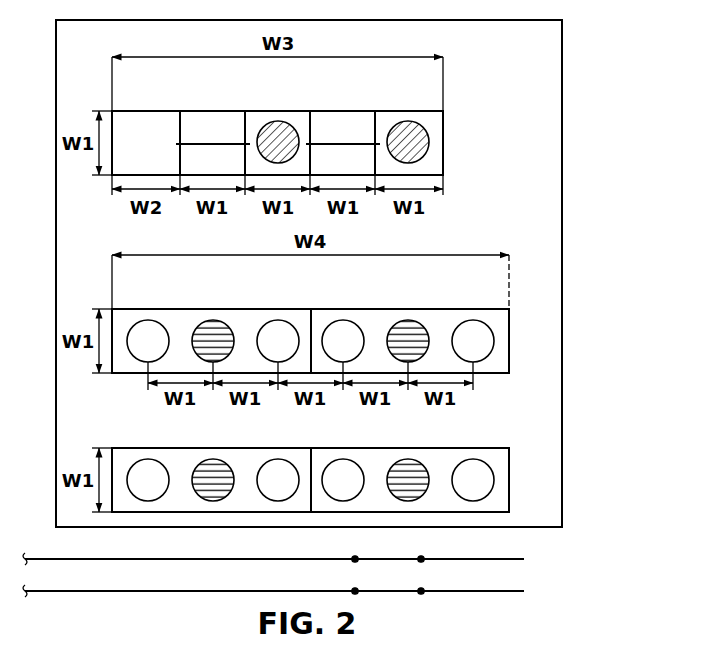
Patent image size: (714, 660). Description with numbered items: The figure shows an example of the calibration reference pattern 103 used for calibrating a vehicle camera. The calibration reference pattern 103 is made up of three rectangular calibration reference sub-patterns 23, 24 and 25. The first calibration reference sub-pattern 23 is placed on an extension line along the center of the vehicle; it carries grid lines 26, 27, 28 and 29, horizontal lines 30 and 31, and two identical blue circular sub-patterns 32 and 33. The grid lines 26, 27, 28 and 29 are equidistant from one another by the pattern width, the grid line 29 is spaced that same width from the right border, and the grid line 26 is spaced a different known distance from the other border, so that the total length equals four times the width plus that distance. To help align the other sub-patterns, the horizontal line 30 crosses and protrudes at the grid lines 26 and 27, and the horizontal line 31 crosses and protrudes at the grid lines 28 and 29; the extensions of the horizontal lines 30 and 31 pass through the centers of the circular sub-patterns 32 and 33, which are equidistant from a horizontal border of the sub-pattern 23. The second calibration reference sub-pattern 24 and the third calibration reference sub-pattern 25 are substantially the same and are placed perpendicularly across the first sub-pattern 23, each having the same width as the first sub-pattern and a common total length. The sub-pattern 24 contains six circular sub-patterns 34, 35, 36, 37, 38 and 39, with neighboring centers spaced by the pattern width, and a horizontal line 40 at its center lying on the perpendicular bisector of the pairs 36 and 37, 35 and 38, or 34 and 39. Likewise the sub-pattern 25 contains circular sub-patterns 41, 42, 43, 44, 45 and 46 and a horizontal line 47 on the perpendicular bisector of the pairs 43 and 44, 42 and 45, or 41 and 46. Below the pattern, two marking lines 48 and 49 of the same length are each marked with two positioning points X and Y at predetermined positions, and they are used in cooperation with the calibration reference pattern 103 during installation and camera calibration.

The calibration reference pattern 103 is at (562, 272).
The first calibration reference sub-pattern 23 is at (443, 137).
The second calibration reference sub-pattern 24 is at (509, 335).
The third calibration reference sub-pattern 25 is at (509, 474).
The grid line 26 is at (180, 123).
The grid line 27 is at (245, 123).
The grid line 28 is at (310, 123).
The grid line 29 is at (375, 123).
The horizontal line 30 is at (213, 143).
The horizontal line 31 is at (343, 143).
The circular sub-pattern 32 is at (280, 121).
The circular sub-pattern 33 is at (409, 121).
The circular sub-pattern 34 is at (151, 322).
The circular sub-pattern 35 is at (216, 322).
The circular sub-pattern 36 is at (281, 322).
The circular sub-pattern 37 is at (346, 322).
The circular sub-pattern 38 is at (410, 322).
The circular sub-pattern 39 is at (475, 322).
The horizontal line 40 is at (311, 319).
The circular sub-pattern 41 is at (151, 461).
The circular sub-pattern 42 is at (216, 461).
The circular sub-pattern 43 is at (281, 461).
The circular sub-pattern 44 is at (346, 461).
The circular sub-pattern 45 is at (410, 461).
The circular sub-pattern 46 is at (475, 461).
The horizontal line 47 is at (311, 458).
The marking line 48 is at (518, 591).
The marking line 49 is at (518, 559).